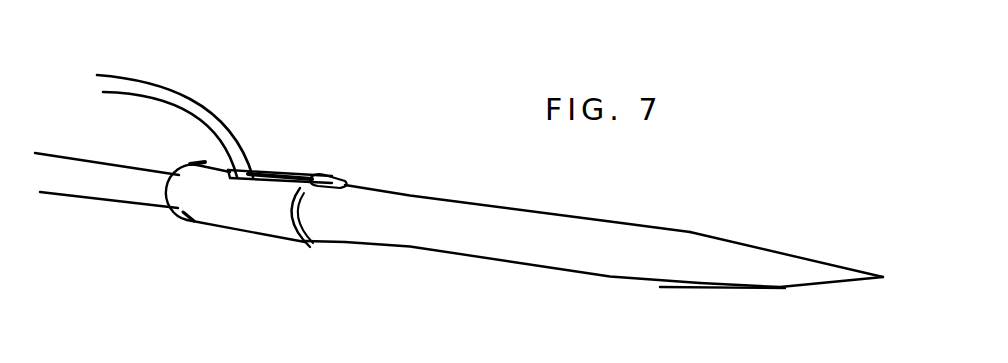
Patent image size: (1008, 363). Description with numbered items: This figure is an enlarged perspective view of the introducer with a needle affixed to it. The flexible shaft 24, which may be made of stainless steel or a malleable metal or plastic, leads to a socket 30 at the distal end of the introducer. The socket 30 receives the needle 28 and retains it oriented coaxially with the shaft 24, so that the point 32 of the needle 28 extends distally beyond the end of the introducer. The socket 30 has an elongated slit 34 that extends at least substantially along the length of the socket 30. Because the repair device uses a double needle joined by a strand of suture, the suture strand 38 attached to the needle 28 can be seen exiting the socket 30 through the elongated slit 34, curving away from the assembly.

The shaft 24 is at (92, 188).
The needle 28 is at (448, 230).
The socket 30 is at (242, 217).
The point 32 is at (860, 272).
The elongated slit 34 is at (290, 170).
The suture strand 38 is at (205, 100).